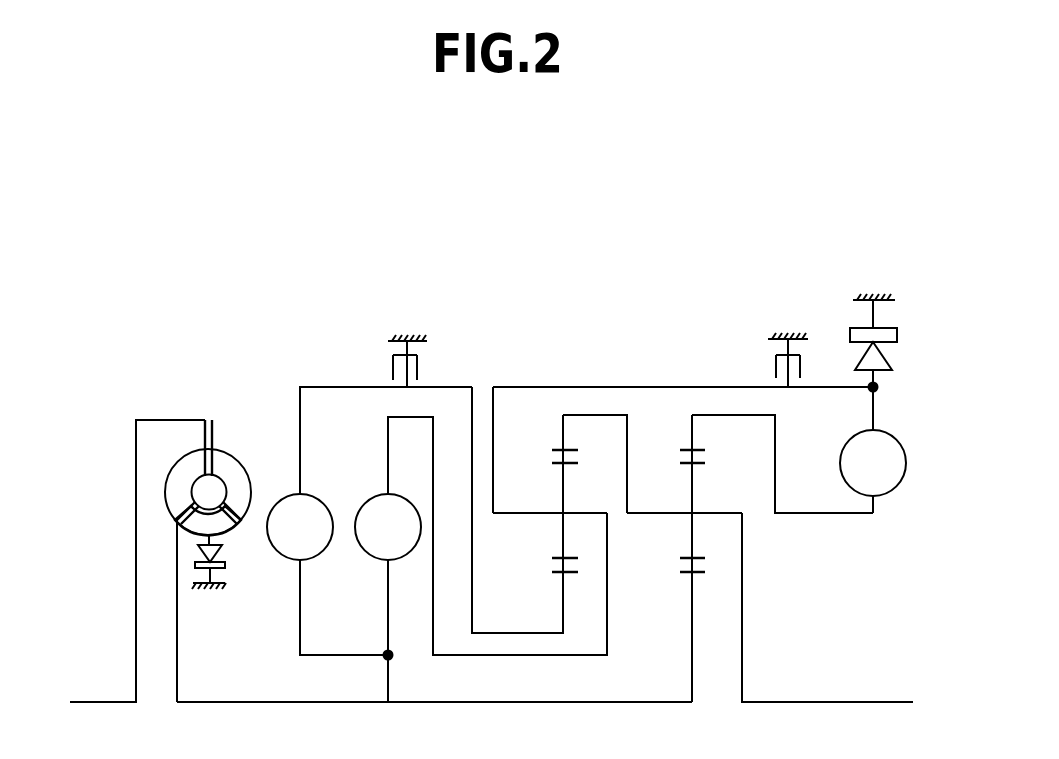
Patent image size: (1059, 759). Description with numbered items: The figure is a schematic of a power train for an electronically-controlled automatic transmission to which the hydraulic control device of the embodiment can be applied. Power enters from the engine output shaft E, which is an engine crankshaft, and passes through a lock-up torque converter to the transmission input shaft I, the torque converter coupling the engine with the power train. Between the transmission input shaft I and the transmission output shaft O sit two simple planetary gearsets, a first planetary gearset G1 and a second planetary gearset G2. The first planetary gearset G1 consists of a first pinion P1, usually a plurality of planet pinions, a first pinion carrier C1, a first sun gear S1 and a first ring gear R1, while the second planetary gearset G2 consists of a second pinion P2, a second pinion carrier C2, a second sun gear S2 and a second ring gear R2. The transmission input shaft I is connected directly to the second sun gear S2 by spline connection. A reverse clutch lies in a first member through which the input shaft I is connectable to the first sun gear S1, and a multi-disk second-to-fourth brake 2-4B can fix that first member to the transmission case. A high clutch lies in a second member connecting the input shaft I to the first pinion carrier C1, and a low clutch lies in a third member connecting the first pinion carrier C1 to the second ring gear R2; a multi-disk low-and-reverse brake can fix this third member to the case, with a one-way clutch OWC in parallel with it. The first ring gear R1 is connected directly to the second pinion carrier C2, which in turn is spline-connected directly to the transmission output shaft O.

The engine output shaft E is at (124, 702).
The 2-4 brake 2-4B is at (392, 360).
The first planetary gearset G1 is at (552, 410).
The first ring gear R1 is at (564, 420).
The first pinion carrier C1 is at (526, 512).
The first pinion P1 is at (563, 535).
The first sun gear S1 is at (563, 598).
The second planetary gearset G2 is at (684, 410).
The second ring gear R2 is at (692, 420).
The second pinion carrier C2 is at (650, 513).
The second pinion P2 is at (692, 535).
The second sun gear S2 is at (692, 617).
The one-way clutch OWC is at (857, 360).
The transmission input shaft I is at (283, 702).
The transmission output shaft O is at (840, 702).